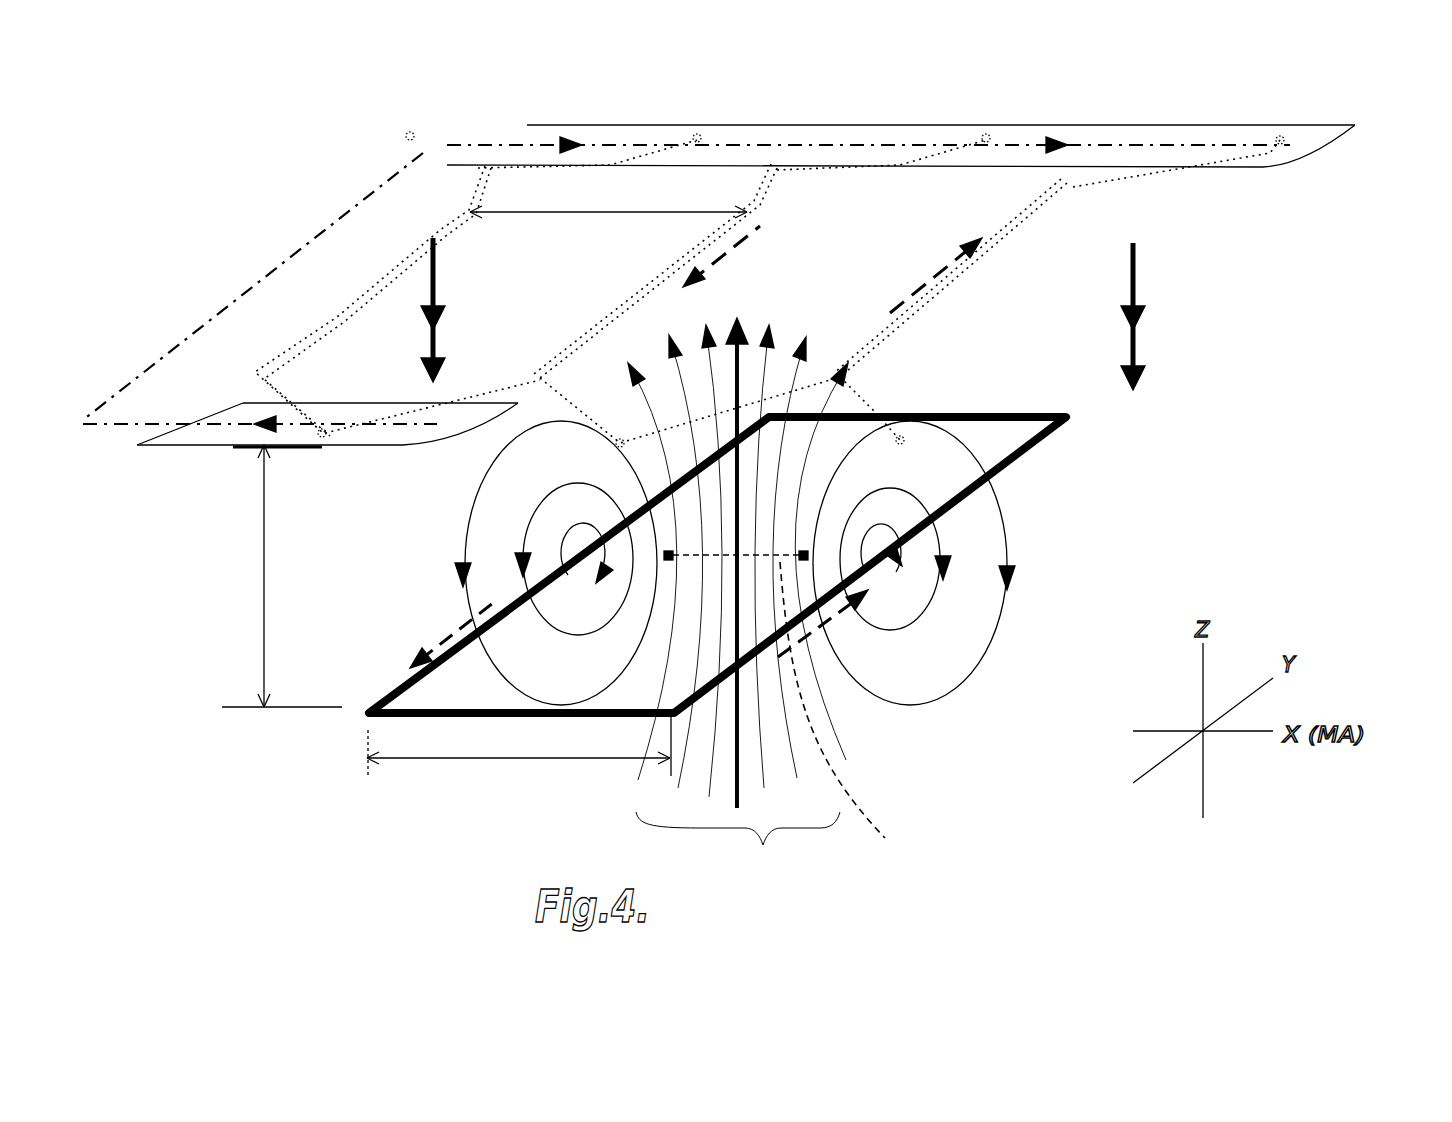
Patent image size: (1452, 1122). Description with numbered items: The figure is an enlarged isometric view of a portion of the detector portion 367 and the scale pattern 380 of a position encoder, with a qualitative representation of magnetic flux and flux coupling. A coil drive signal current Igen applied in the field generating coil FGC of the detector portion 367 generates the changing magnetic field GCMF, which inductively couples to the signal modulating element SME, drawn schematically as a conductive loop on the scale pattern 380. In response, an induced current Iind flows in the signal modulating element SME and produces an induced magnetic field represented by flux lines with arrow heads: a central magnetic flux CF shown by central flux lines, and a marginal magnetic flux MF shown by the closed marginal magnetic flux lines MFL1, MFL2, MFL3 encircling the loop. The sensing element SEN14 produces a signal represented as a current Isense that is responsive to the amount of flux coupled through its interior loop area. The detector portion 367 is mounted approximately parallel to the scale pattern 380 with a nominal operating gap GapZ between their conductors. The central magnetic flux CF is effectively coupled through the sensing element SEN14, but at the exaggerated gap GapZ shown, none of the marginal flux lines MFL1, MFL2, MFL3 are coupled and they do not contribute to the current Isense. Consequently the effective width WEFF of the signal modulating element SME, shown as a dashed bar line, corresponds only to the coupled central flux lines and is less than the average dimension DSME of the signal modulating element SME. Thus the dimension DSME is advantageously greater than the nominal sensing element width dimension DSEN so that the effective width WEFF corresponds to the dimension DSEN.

The detector portion 367 is at (767, 279).
The scale pattern 380 is at (881, 515).
The sensing element SEN14 is at (1150, 167).
The field generating coil FGC is at (1255, 170).
The signal modulating element SME is at (1035, 450).
The marginal magnetic flux line MFL1 is at (900, 587).
The marginal magnetic flux line MFL2 is at (925, 603).
The marginal magnetic flux line MFL3 is at (978, 658).
The marginal magnetic flux MF is at (1008, 728).
The effective width WEFF is at (807, 707).
The coil drive signal current Igen is at (537, 143).
The sensing element current Isense is at (727, 255).
The induced current Iind is at (452, 642).
The generated changing magnetic field GCMF is at (823, 314).
The nominal operating gap GapZ is at (264, 575).
The nominal sensing element width dimension DSEN is at (582, 212).
The average dimension of the signal modulating element DSME is at (487, 758).
The central magnetic flux CF is at (738, 845).